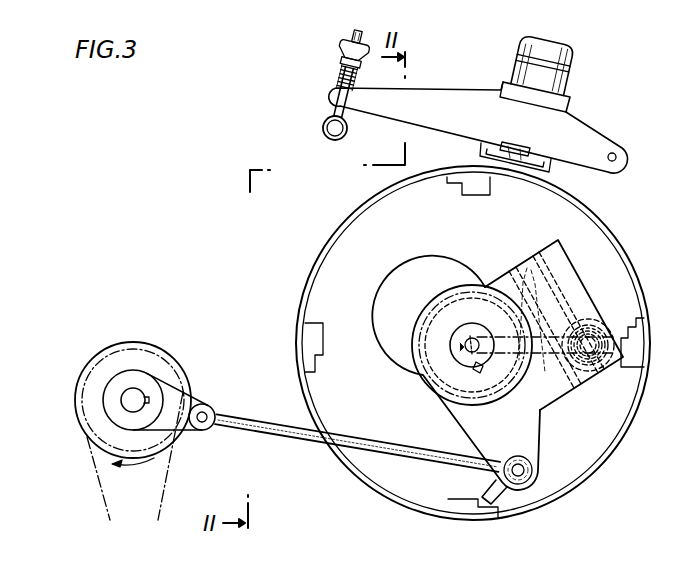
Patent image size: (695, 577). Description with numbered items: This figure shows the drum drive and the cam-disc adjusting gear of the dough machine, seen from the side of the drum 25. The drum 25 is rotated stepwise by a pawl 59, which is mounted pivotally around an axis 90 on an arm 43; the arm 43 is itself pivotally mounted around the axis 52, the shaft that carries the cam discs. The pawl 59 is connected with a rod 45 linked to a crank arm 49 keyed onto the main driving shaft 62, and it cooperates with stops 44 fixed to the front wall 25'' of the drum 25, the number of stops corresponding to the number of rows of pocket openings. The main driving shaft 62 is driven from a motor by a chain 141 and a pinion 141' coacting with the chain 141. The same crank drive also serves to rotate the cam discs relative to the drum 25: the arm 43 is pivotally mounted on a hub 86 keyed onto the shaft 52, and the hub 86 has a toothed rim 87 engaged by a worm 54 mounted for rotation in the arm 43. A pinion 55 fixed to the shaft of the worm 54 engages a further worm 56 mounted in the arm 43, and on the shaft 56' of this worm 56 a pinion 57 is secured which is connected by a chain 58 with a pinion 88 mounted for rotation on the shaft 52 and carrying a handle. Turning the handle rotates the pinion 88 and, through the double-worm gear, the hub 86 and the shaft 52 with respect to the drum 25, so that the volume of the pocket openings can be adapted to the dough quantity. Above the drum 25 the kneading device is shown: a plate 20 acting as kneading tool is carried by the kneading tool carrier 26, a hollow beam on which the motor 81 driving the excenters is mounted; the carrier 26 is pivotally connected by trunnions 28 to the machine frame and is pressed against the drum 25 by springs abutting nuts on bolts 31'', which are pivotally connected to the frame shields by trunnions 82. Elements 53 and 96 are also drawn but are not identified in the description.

The plate 20 is at (478, 151).
The drum 25 is at (456, 343).
The front wall of the drum 25'' is at (334, 365).
The kneading tool carrier 26 is at (504, 90).
The trunnions 28 is at (624, 156).
The bolts 31'' is at (329, 73).
The arm 43 is at (460, 425).
The stops 44 is at (470, 188).
The rod 45 is at (275, 438).
The crank arm 49 is at (206, 404).
The shaft 52 is at (454, 342).
The hub 53 is at (413, 334).
The worm 54 is at (522, 292).
The pinion 55 is at (572, 382).
The further worm 56 is at (588, 311).
The shaft of the worm 56' is at (598, 365).
The pinion 57 is at (596, 334).
The chain 58 is at (510, 362).
The pawl 59 is at (503, 500).
The main driving shaft 62 is at (120, 403).
The motor 81 is at (516, 57).
The trunnions 82 is at (316, 131).
The hub 86 is at (422, 352).
The toothed rim 87 is at (428, 380).
The pinion 88 is at (468, 338).
The axis 90 is at (533, 470).
The chamber 96 is at (406, 255).
The chain 141 is at (119, 456).
The pinion 141' is at (109, 404).